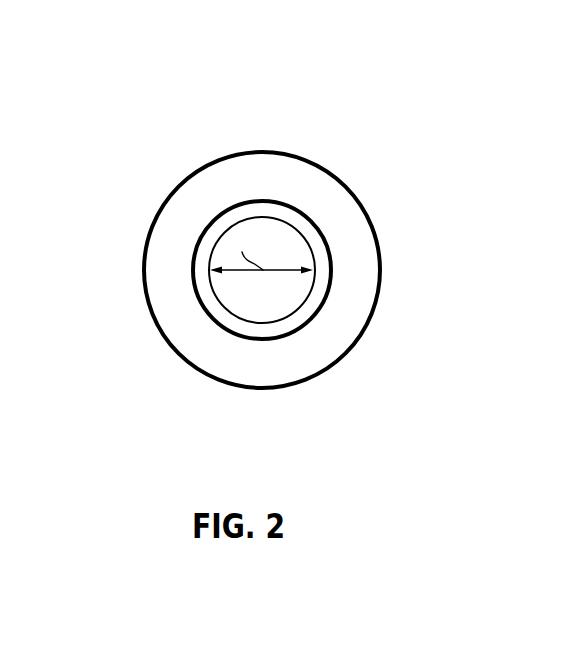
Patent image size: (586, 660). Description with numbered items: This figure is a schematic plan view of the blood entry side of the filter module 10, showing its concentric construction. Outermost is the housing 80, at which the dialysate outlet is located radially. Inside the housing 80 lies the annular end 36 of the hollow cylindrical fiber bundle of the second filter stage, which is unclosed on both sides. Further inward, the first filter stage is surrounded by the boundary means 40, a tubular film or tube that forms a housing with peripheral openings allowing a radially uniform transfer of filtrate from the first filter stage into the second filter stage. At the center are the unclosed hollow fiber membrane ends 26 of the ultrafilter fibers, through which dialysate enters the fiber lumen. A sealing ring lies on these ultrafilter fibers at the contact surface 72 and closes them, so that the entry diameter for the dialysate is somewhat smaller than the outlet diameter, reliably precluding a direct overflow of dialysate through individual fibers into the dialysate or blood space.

The filter module 10 is at (142, 125).
The unclosed hollow fiber membrane ends 26 is at (278, 230).
The contact surface 72 is at (320, 256).
The boundary means 40 is at (320, 305).
The end of fiber bundle 36 is at (310, 355).
The housing 80 is at (182, 357).